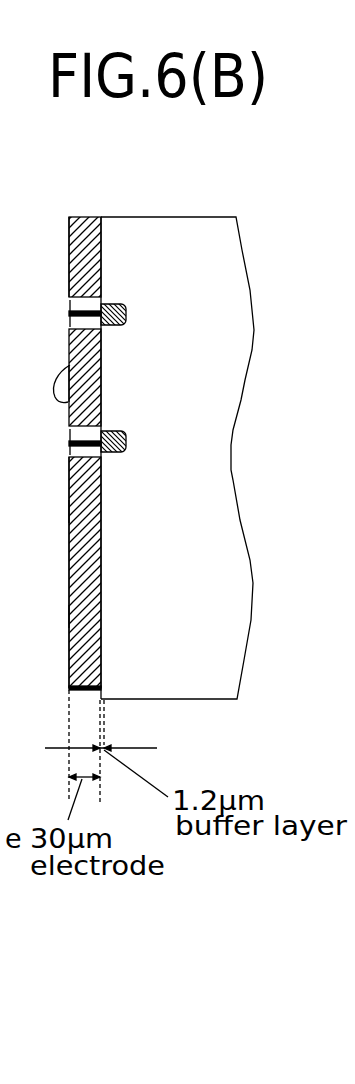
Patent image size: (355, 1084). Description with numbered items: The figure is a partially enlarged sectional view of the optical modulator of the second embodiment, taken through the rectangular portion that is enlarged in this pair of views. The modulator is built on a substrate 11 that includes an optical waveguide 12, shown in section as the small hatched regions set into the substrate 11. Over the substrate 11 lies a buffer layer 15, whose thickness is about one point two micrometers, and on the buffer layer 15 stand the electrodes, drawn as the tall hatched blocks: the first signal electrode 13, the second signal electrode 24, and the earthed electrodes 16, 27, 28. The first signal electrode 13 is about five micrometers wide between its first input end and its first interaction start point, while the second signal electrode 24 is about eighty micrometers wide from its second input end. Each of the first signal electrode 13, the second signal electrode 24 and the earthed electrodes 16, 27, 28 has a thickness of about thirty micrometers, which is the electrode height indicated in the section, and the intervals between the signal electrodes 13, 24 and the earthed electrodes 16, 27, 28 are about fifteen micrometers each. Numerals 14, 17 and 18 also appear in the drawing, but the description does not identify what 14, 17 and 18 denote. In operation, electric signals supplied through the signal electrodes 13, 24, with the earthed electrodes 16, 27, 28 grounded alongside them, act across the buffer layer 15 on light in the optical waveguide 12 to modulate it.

The substrate 11 is at (188, 229).
The optical waveguide 12 is at (127, 311).
The first signal electrode 13 is at (75, 295).
The ground electrode 14 is at (72, 462).
The buffer layer 15 is at (101, 217).
The earthed electrode 16 is at (69, 243).
The electrode 17 is at (34, 399).
The electrode 18 is at (34, 617).
The second signal electrode 24 is at (34, 512).
The earthed electrode 27 is at (102, 356).
The earthed electrode 28 is at (68, 595).